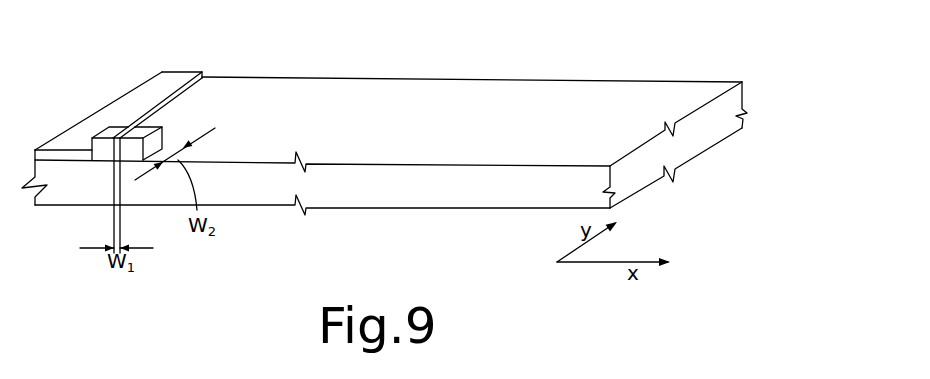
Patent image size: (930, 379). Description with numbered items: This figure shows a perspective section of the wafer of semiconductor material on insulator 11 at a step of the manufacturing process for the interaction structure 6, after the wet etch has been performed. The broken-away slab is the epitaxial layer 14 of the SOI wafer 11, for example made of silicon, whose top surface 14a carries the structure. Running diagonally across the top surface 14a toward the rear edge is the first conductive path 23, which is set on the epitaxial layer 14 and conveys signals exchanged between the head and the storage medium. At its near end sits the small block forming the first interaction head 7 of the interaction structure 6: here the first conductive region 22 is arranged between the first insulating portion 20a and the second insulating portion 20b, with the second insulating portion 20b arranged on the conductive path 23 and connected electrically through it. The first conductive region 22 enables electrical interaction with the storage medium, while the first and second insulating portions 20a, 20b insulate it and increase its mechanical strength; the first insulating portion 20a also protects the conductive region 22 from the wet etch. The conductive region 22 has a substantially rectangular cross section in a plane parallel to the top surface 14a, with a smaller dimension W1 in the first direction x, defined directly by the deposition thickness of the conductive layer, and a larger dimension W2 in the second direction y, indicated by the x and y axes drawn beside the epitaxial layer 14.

The interaction structure 6 is at (79, 121).
The first interaction head 7 is at (176, 136).
The wafer of semiconductor material on insulator 11 is at (752, 128).
The epitaxial layer 14 is at (640, 174).
The top surface of the epitaxial layer 14a is at (701, 82).
The first insulating portion 20a is at (163, 128).
The second insulating portion 20b is at (100, 150).
The first conductive region 22 is at (107, 141).
The first conductive path 23 is at (168, 80).